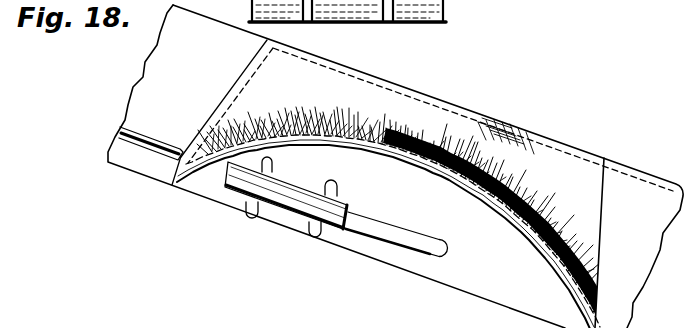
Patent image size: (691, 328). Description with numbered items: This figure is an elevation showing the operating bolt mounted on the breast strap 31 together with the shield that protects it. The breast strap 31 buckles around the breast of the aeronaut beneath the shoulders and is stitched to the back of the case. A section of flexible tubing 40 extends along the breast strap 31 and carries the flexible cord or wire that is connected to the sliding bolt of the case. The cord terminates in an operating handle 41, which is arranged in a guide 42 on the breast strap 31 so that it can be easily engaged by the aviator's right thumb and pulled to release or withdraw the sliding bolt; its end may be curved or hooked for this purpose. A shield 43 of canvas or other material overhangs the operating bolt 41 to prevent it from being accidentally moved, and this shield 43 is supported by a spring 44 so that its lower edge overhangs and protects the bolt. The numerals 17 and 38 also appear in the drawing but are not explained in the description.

The keyboard/lettering unit 17 is at (444, 14).
The breast strap 31 is at (157, 47).
The panel section 38 is at (157, 170).
The flexible tubing 40 is at (147, 133).
The operating handle 41 is at (373, 227).
The guide 42 is at (279, 183).
The shield 43 is at (510, 165).
The spring 44 is at (306, 143).